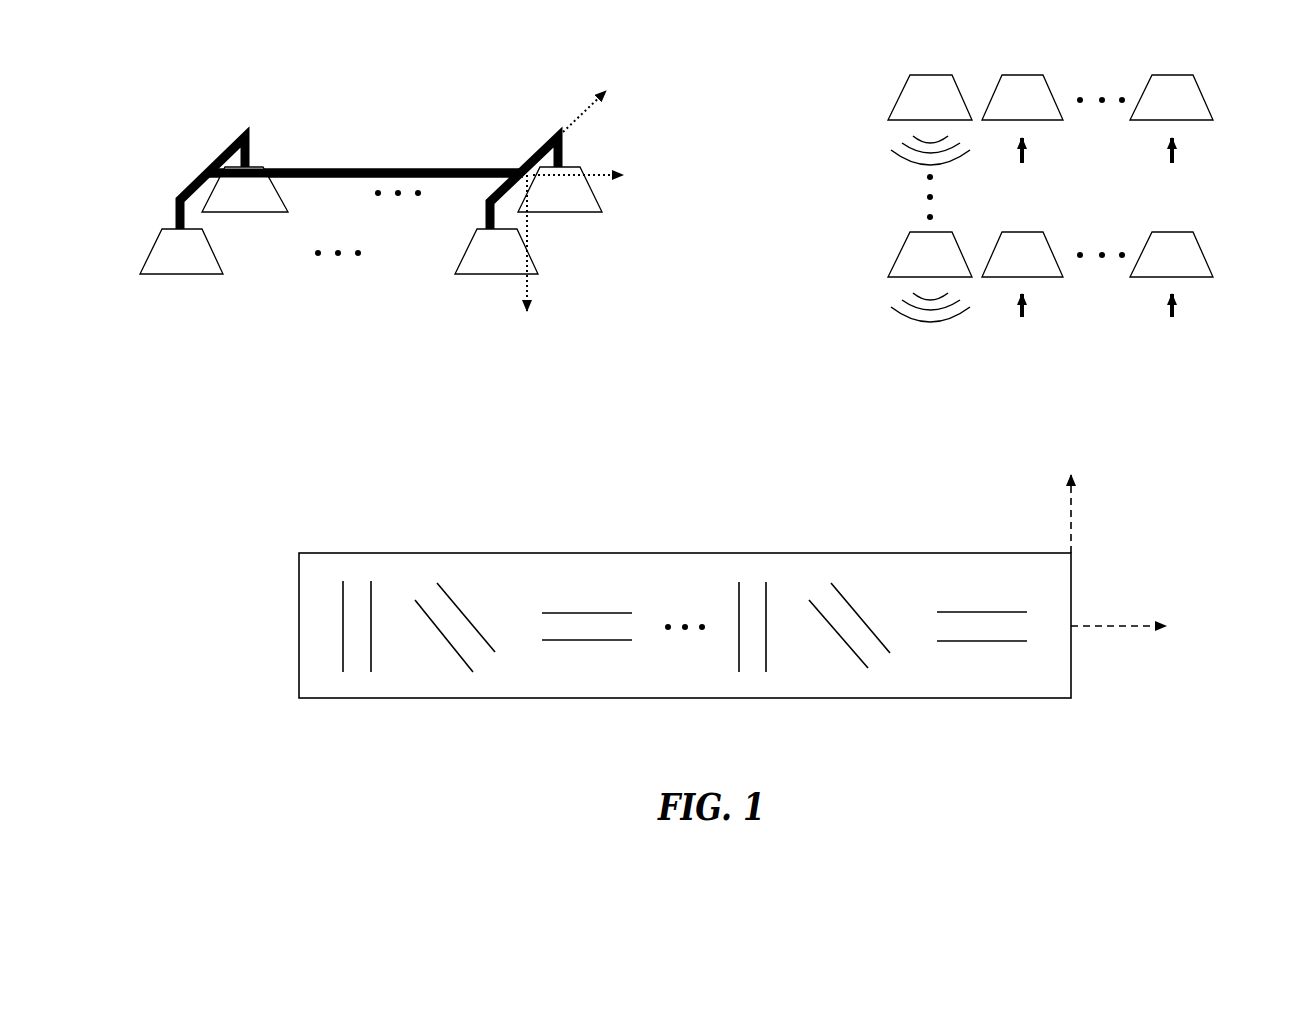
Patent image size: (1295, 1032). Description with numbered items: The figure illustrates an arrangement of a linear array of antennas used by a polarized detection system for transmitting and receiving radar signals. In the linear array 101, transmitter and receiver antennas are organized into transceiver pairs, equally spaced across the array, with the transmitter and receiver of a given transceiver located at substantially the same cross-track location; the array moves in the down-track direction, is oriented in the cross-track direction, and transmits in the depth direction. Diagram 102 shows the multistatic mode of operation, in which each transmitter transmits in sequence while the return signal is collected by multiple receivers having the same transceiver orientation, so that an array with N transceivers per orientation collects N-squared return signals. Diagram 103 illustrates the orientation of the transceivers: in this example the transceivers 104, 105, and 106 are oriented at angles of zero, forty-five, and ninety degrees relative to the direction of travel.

The linear array 101 is at (313, 330).
The diagram 102 is at (1082, 350).
The diagram 103 is at (784, 617).
The transceiver 104 is at (357, 677).
The transceiver 105 is at (458, 677).
The transceiver 106 is at (582, 648).